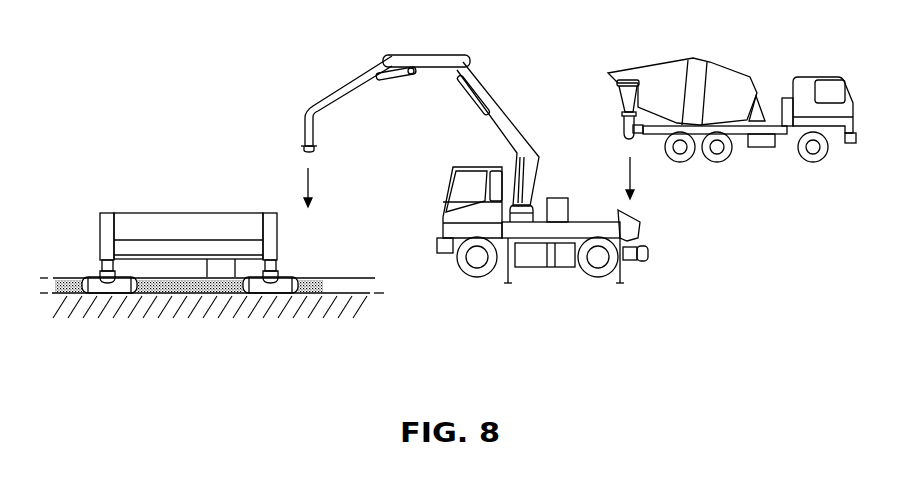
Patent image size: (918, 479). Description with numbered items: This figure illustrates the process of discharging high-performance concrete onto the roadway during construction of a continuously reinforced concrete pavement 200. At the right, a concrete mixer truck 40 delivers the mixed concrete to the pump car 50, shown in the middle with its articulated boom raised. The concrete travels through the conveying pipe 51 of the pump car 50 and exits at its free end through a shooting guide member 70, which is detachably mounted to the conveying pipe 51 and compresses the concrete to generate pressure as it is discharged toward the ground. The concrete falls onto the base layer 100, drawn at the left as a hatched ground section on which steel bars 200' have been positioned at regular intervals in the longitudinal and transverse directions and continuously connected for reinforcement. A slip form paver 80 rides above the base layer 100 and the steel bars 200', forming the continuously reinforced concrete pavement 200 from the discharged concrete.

The concrete mixer truck 40 is at (733, 70).
The pump car 50 is at (592, 220).
The conveying pipe 51 is at (340, 88).
The shooting guide member 70 is at (316, 147).
The slip form paver 80 is at (170, 220).
The base layer 100 is at (135, 307).
The continuously reinforced concrete pavement 200 is at (190, 327).
The steel bars 200' is at (189, 316).